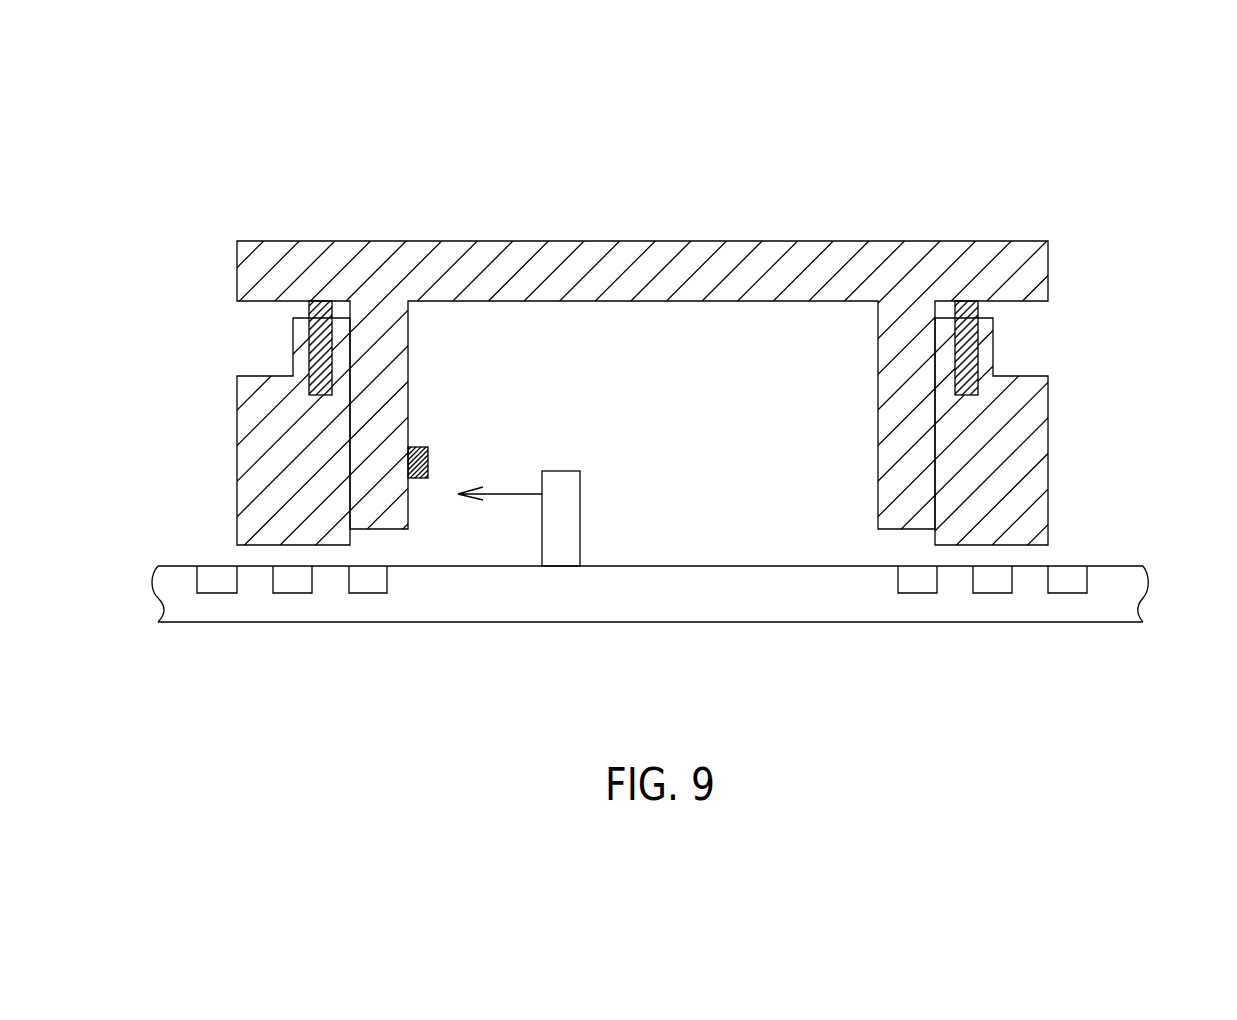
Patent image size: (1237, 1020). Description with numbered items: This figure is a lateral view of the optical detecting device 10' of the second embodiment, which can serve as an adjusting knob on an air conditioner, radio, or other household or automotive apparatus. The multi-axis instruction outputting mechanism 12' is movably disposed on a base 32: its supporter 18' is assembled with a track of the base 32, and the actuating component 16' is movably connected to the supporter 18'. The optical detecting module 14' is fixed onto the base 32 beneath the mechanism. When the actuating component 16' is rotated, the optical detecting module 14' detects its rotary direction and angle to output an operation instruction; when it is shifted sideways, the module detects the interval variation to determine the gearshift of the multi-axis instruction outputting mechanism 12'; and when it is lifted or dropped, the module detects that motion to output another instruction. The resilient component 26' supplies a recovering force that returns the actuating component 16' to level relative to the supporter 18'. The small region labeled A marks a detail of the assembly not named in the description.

The optical detecting device 10' is at (618, 350).
The multi-axis instruction outputting mechanism 12' is at (618, 350).
The optical detecting module 14' is at (572, 518).
The actuating component 16' is at (691, 385).
The supporter 18' is at (691, 431).
The resilient component 26' is at (676, 250).
The base 32 is at (1125, 603).
The gap region A is at (440, 461).